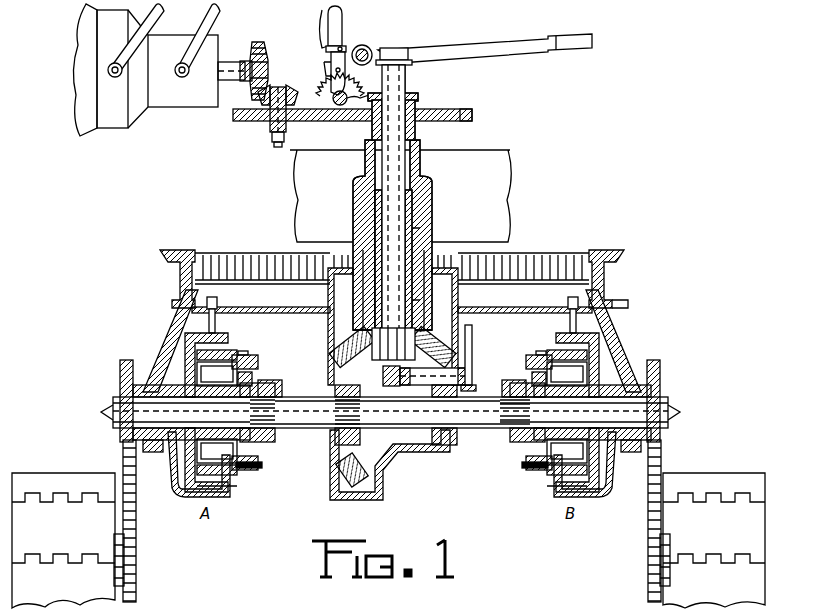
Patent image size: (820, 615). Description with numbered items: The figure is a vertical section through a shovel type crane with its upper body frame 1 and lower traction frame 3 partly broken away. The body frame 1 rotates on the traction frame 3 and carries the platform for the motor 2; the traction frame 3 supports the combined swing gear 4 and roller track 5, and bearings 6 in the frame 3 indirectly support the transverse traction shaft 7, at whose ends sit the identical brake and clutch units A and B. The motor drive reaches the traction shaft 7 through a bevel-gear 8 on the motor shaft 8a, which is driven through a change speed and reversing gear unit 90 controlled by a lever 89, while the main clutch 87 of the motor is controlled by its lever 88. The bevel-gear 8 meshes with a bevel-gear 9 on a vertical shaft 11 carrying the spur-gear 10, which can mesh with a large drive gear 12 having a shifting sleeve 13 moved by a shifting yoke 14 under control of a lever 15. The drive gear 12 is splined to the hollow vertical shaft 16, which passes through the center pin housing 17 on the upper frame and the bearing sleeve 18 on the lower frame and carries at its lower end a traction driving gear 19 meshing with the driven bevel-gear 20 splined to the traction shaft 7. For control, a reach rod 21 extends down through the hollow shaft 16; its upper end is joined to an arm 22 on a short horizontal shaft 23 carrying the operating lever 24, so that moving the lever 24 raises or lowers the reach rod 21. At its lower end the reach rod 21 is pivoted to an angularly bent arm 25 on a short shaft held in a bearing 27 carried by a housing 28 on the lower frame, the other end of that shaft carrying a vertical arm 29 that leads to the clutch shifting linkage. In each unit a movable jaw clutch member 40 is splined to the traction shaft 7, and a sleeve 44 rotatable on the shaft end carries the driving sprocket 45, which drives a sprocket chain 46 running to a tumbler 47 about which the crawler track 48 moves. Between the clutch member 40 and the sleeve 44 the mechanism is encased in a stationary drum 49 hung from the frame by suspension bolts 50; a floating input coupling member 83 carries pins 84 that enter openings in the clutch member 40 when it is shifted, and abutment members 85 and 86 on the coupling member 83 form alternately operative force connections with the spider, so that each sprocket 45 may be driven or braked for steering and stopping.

The upper body frame 1 is at (512, 196).
The motor 2 is at (80, 130).
The lower traction frame 3 is at (186, 325).
The swing gear 4 is at (538, 258).
The roller track 5 is at (607, 273).
The bearings 6 is at (158, 452).
The traction shaft 7 is at (472, 428).
The bevel-gear 8 is at (262, 50).
The motor shaft 8a is at (228, 62).
The bevel-gear 9 is at (287, 95).
The spur-gear 10 is at (247, 122).
The vertical shaft 11 is at (276, 147).
The drive gear 12 is at (468, 110).
The shifting sleeve 13 is at (416, 110).
The shifting yoke 14 is at (410, 97).
The lever 15 is at (345, 18).
The hollow vertical shaft 16 is at (405, 180).
The center pin housing 17 is at (432, 201).
The bearing sleeve 18 is at (417, 308).
The traction driving gear 19 is at (422, 346).
The driven bevel-gear 20 is at (342, 470).
The reach rod 21 is at (405, 72).
The arm 22 is at (392, 48).
The short horizontal shaft 23 is at (349, 64).
The operating lever 24 is at (505, 55).
The angularly bent arm 25 is at (392, 388).
The bearing 27 is at (432, 388).
The housing 28 is at (330, 360).
The vertical arm 29 is at (474, 352).
The movable jaw clutch member 40 is at (262, 470).
The sleeve 44 is at (162, 428).
The driving sprocket 45 is at (120, 379).
The driving sprocket chain 46 is at (136, 476).
The tumbler 47 is at (126, 541).
The track 48 is at (48, 500).
The stationary drum 49 is at (192, 497).
The suspension bolts 50 is at (218, 328).
The input coupling member 83 is at (254, 385).
The pins 84 is at (250, 362).
The abutment member 85 is at (215, 475).
The abutment member 86 is at (200, 360).
The main clutch 87 is at (120, 128).
The lever 88 is at (161, 18).
The lever 89 is at (221, 18).
The change speed and reversing gear unit 90 is at (180, 107).